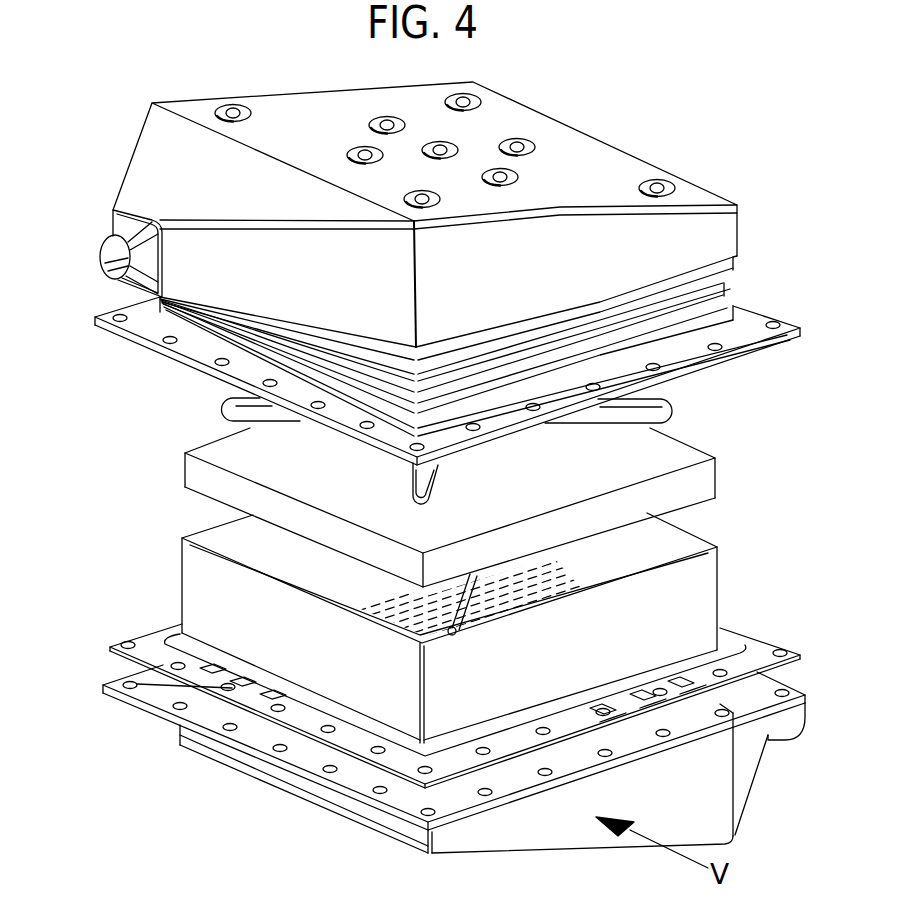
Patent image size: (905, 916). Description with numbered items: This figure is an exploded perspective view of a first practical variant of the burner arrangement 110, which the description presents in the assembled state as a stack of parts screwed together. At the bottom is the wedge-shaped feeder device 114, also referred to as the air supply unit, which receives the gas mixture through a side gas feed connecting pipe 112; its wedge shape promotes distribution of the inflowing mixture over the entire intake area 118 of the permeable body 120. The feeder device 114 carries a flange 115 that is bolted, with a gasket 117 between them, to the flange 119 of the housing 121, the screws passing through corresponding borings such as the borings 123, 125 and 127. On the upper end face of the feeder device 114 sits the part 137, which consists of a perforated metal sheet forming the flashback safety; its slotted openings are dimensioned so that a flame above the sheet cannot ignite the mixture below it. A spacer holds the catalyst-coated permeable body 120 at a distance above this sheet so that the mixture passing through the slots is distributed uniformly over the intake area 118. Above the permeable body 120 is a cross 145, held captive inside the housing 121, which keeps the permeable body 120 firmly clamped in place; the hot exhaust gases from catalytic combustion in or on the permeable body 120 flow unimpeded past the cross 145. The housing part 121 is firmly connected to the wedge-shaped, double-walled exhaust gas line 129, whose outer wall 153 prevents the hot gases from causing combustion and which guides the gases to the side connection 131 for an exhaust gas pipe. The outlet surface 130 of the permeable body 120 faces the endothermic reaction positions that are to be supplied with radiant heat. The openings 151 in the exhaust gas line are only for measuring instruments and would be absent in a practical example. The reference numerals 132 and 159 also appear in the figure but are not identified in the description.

The burner arrangement 110 is at (730, 590).
The side gas feed connecting pipe 112 is at (800, 720).
The feeder device 114 is at (550, 848).
The flange 115 is at (138, 701).
The gasket 117 is at (118, 656).
The intake area 118 is at (612, 528).
The flange 119 is at (127, 343).
The permeable body 120 is at (717, 468).
The housing 121 is at (738, 284).
The boring 123 is at (216, 367).
The boring 125 is at (230, 690).
The boring 127 is at (278, 750).
The exhaust gas line 129 is at (725, 238).
The outlet surface 130 is at (675, 452).
The side connection 131 is at (100, 257).
The side wall 132 is at (757, 776).
The part 137 is at (197, 570).
The cross 145 is at (666, 411).
The openings for measuring instruments 151 is at (517, 177).
The outer wall 153 is at (112, 216).
The flow arrows 159 is at (362, 510).